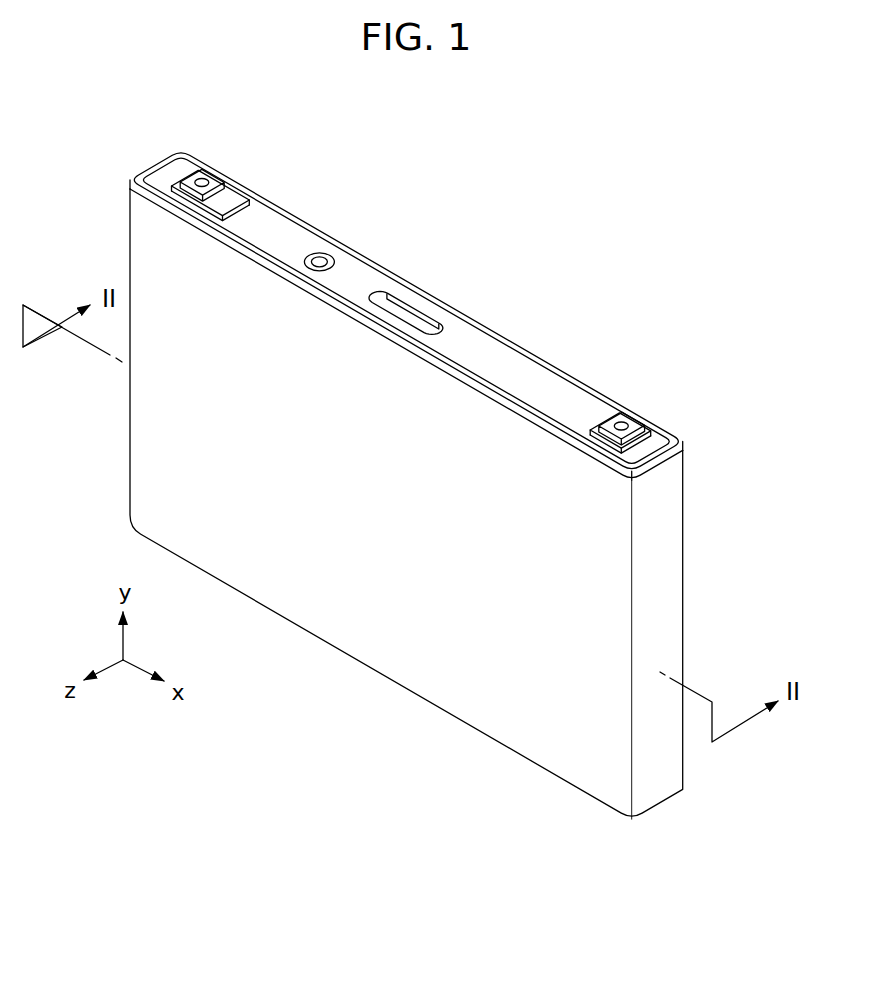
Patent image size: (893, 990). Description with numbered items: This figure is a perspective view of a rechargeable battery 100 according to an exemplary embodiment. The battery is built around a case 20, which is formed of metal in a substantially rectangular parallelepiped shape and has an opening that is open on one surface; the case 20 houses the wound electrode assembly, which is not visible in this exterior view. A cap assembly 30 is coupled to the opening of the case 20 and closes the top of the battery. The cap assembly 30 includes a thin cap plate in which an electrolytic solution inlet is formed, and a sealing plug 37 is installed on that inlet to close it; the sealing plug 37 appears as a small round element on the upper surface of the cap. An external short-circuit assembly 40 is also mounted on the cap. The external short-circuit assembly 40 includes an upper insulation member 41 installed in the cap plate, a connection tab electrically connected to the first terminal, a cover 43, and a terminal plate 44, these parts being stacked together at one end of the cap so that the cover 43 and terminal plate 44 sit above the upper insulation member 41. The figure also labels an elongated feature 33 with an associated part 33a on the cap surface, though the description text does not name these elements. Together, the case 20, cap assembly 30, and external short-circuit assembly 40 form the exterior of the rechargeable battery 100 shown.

The rechargeable battery 100 is at (396, 454).
The case 20 is at (385, 660).
The cap assembly 30 is at (396, 285).
The electrolyte injection opening 33 is at (431, 273).
The sealing plug 33a is at (401, 303).
The sealing plug 37 is at (330, 254).
The external short-circuit assembly 40 is at (220, 155).
The upper insulation member 41 is at (249, 193).
The cover 43 is at (226, 195).
The terminal plate 44 is at (189, 181).